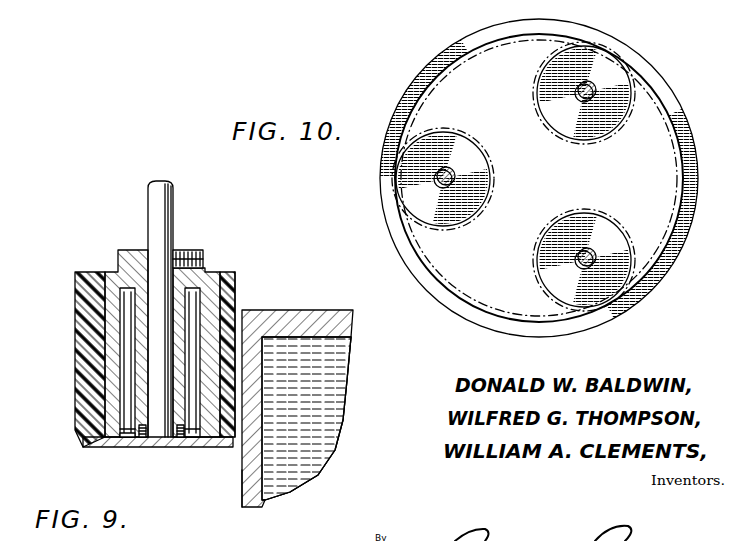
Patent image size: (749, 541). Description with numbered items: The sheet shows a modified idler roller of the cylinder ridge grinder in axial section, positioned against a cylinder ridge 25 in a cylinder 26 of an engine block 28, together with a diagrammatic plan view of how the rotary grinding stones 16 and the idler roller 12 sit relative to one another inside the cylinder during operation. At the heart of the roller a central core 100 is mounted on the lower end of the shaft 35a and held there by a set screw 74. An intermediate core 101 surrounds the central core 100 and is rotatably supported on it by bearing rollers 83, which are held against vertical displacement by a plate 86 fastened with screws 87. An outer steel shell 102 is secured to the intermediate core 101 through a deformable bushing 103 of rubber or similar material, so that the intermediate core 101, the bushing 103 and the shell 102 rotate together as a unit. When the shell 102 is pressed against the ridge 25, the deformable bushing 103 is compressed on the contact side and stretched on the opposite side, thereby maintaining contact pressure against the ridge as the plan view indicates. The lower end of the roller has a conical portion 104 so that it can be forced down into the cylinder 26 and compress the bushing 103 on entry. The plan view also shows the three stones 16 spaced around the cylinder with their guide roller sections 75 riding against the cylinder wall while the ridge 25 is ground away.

In FIG. 10, the idler roller 12 is at (637, 90).
In FIG. 10, the rotary grinding stones 16 is at (489, 161).
In FIG. 9, the cylinder ridge 25 is at (228, 314).
In FIG. 10, the cylinder ridge 25 is at (684, 160).
In FIG. 9, the cylinder 26 is at (242, 478).
In FIG. 9, the engine block 28 is at (330, 310).
In FIG. 9, the rod 35a is at (173, 196).
In FIG. 9, the set screw 74 is at (210, 257).
In FIG. 10, the guide roller section 75 is at (539, 170).
In FIG. 9, the bearing rollers 83 is at (127, 350).
In FIG. 9, the plate 86 is at (142, 440).
In FIG. 9, the screws 87 is at (124, 440).
In FIG. 9, the central core 100 is at (187, 250).
In FIG. 9, the intermediate core 101 is at (207, 272).
In FIG. 9, the outer steel shell 102 is at (235, 292).
In FIG. 9, the deformable bushing 103 is at (102, 278).
In FIG. 9, the conical portion 104 is at (82, 438).